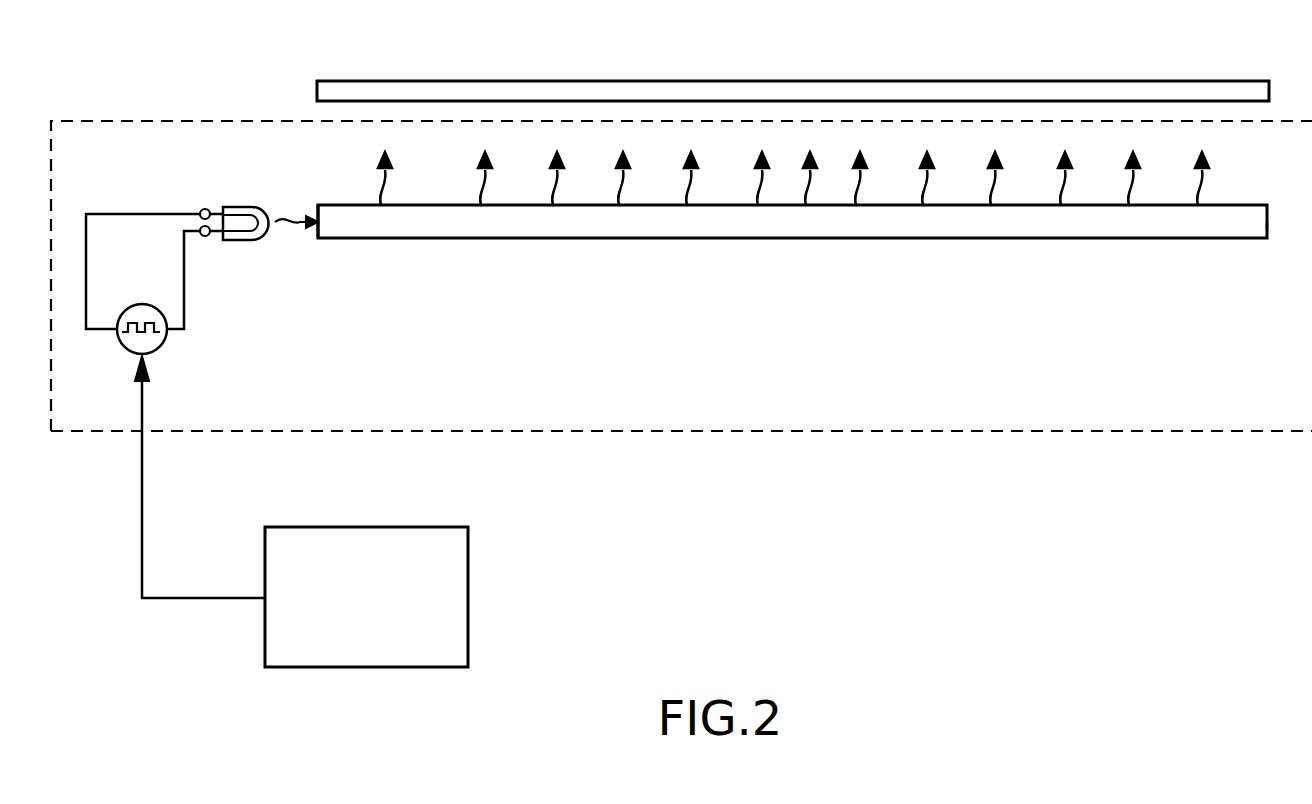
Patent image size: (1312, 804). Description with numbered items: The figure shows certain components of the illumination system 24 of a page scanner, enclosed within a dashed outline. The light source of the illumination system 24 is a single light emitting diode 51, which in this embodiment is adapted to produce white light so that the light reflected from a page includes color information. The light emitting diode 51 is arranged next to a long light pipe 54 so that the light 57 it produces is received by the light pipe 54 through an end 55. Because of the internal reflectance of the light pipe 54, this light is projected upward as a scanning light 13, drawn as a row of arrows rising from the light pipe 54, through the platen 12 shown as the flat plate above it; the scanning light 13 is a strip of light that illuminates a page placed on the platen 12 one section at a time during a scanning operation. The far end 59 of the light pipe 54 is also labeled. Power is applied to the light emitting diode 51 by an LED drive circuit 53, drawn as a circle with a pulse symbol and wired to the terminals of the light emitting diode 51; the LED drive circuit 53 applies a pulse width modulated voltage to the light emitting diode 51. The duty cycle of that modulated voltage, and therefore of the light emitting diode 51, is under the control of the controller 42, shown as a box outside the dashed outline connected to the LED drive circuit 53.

The platen 12 is at (1125, 80).
The scanning light 13 is at (1227, 190).
The illumination system 24 is at (681, 432).
The controller 42 is at (388, 612).
The light emitting diode 51 is at (255, 240).
The LED drive circuit 53 is at (138, 304).
The light pipe 54 is at (1028, 238).
The end 55 is at (318, 205).
The light 57 is at (288, 218).
The distal end of light pipe 59 is at (1267, 220).